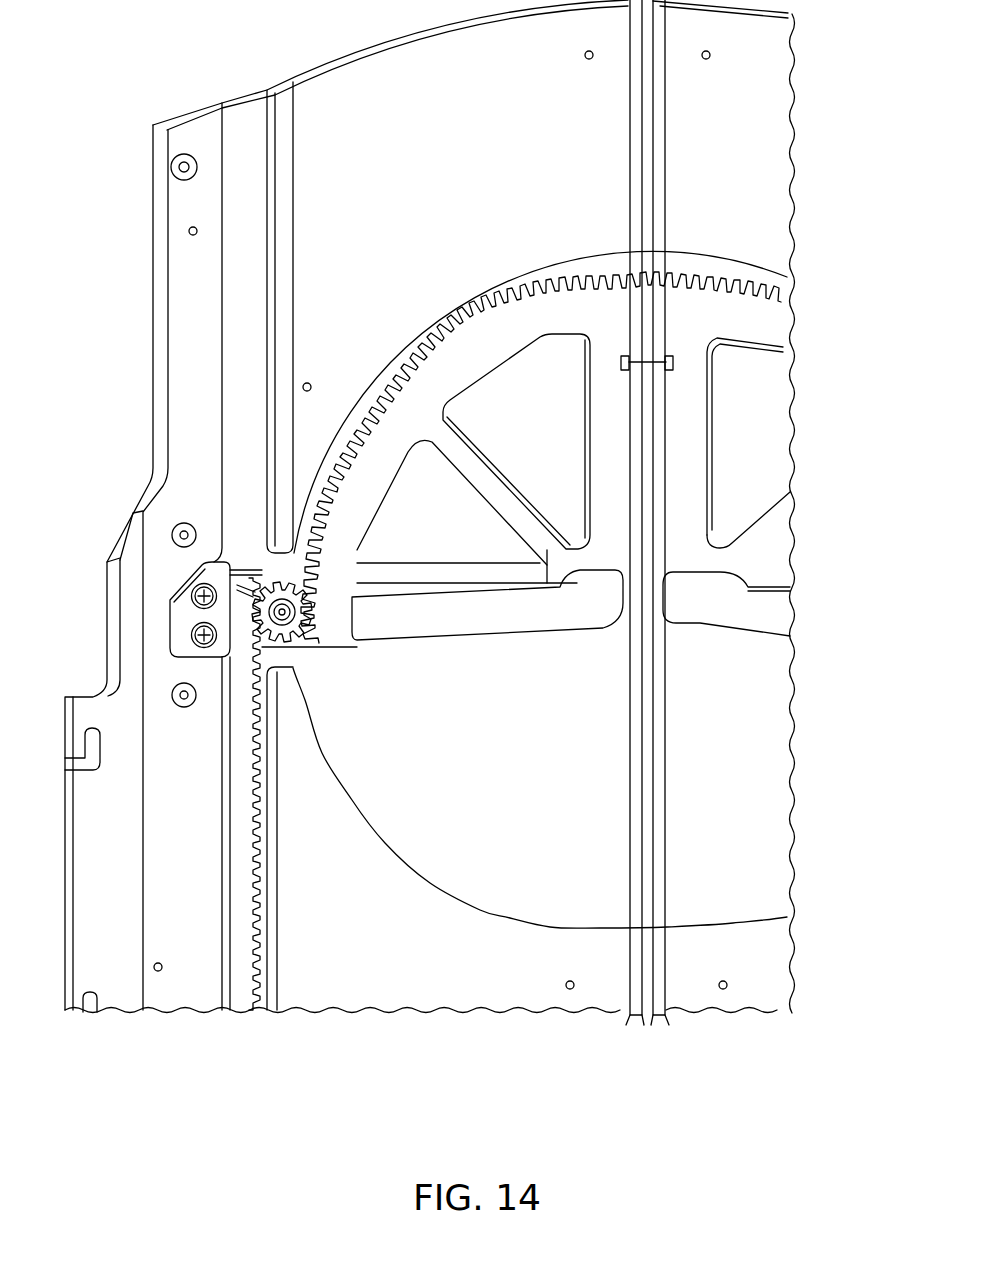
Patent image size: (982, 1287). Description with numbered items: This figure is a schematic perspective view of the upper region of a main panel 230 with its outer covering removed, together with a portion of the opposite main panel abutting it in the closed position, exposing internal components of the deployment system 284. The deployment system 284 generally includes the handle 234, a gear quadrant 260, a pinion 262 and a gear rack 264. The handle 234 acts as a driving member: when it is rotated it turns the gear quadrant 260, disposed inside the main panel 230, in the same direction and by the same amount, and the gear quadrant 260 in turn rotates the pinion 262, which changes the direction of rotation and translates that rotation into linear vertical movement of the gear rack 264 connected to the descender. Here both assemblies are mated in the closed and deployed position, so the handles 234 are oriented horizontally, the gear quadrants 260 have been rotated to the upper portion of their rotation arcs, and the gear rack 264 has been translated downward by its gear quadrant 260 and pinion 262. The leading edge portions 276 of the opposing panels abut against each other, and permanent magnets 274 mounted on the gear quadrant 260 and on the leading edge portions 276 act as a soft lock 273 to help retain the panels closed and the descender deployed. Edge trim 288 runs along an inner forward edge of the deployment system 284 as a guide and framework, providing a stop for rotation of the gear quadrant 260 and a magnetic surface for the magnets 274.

The main panel 230 is at (826, 248).
The deployment system 284 is at (818, 489).
The gear quadrant 260 is at (510, 330).
The pinion 262 is at (300, 648).
The gear rack 264 is at (262, 742).
The soft lock 273 is at (668, 358).
The permanent magnets 274 is at (620, 363).
The handle 234 is at (512, 625).
The leading edge portions 276 is at (640, 820).
The edge trim 288 is at (634, 1018).